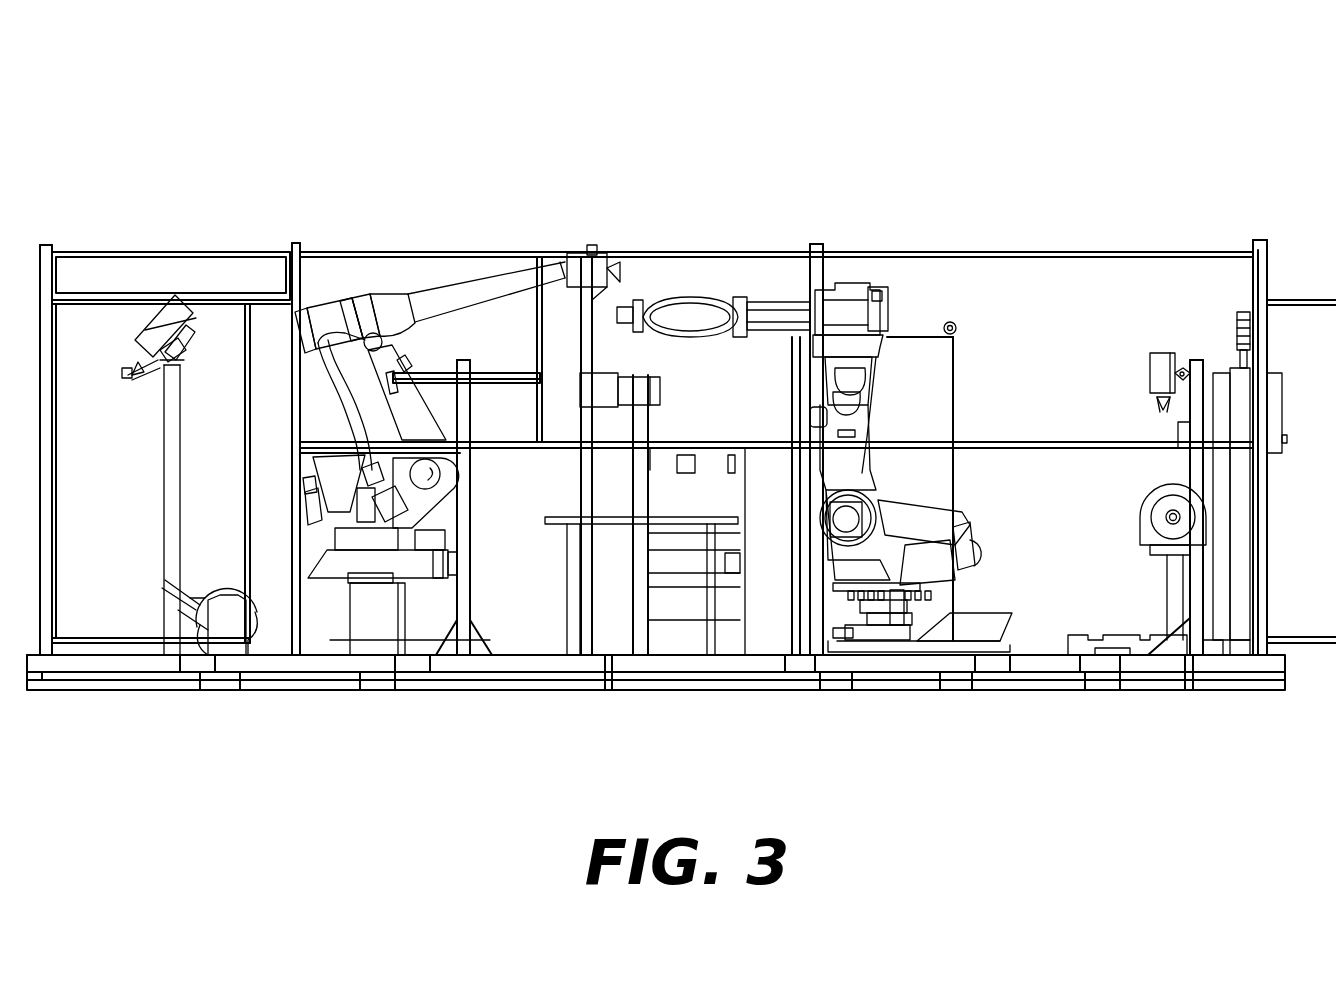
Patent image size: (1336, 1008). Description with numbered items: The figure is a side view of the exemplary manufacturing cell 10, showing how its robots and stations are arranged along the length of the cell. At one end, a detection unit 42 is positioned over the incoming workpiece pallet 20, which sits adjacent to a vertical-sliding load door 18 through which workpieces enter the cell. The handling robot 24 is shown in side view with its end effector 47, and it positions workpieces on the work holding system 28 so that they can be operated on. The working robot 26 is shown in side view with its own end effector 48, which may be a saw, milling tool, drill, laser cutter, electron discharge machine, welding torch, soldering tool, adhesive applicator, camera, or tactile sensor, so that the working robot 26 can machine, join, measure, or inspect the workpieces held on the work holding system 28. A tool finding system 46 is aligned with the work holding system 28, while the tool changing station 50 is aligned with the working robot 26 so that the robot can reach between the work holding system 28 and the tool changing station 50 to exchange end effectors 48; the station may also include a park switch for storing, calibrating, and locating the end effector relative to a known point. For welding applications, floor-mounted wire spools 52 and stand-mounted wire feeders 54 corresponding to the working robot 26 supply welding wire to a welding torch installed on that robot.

The manufacturing cell 10 is at (995, 125).
The vertical-sliding load door 18 is at (1257, 420).
The incoming workpiece pallet 20 is at (1083, 643).
The handling robot 24 is at (893, 610).
The working robot 26 is at (432, 478).
The work holding system 28 is at (552, 520).
The detection unit 42 is at (1160, 365).
The tool finding system 46 is at (580, 400).
The end effector 47 is at (622, 283).
The end effector 48 is at (585, 267).
The tool changing station 50 is at (532, 372).
The floor-mounted wire spools 52 is at (200, 600).
The stand-mounted wire feeders 54 is at (168, 313).